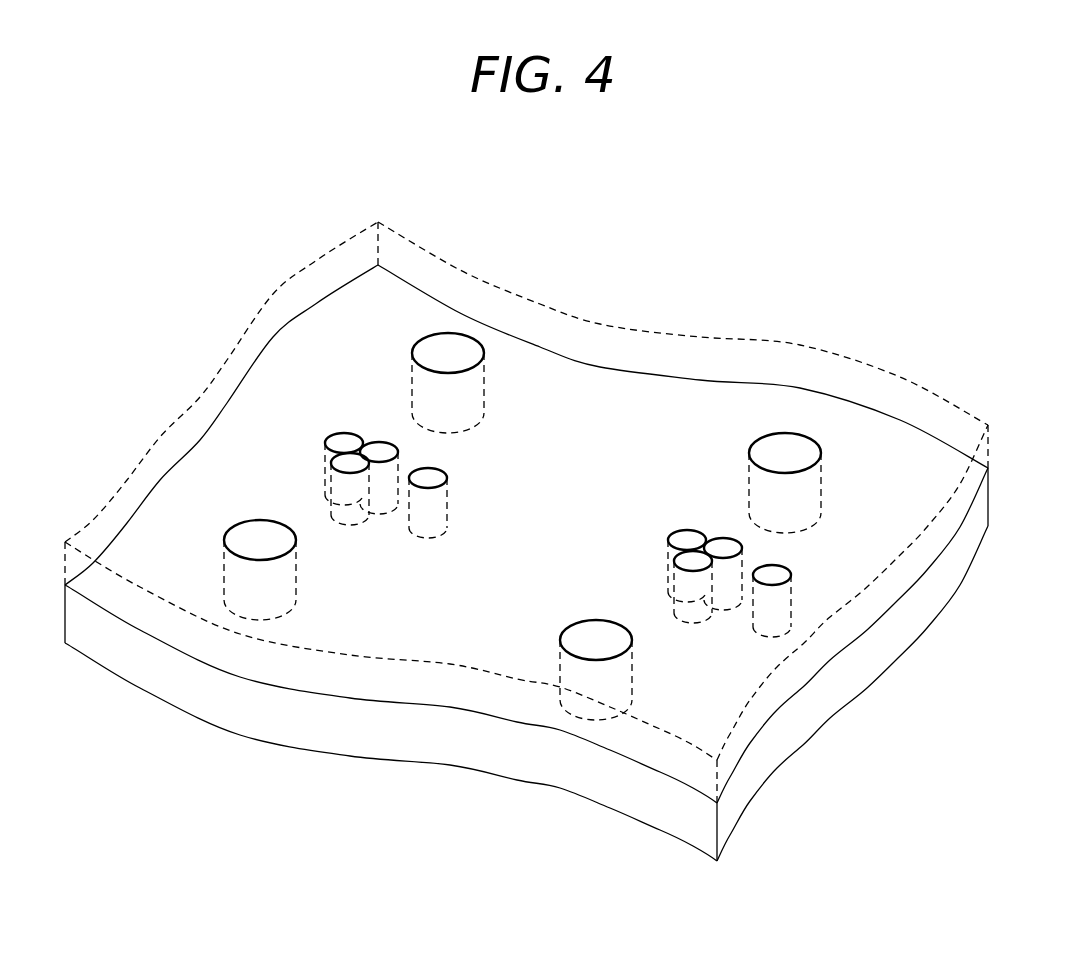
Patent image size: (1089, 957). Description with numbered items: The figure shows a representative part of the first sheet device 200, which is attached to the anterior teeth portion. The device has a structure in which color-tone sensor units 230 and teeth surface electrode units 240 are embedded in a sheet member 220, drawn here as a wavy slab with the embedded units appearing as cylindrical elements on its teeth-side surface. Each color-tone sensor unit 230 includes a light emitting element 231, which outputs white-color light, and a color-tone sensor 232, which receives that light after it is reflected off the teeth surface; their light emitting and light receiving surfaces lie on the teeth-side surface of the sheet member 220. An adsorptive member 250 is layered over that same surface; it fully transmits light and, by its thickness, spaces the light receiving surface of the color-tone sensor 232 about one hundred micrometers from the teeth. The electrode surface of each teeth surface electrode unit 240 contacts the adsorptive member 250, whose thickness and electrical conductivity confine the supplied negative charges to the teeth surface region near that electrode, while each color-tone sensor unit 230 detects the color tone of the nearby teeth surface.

The first sheet device 200 is at (699, 211).
The sheet member 220 is at (990, 497).
The adsorptive member 250 is at (990, 447).
The color-tone sensor unit 230 is at (217, 224).
The light emitting element 231 is at (344, 420).
The color-tone sensor 232 is at (418, 478).
The teeth surface electrode unit 240 is at (447, 352).